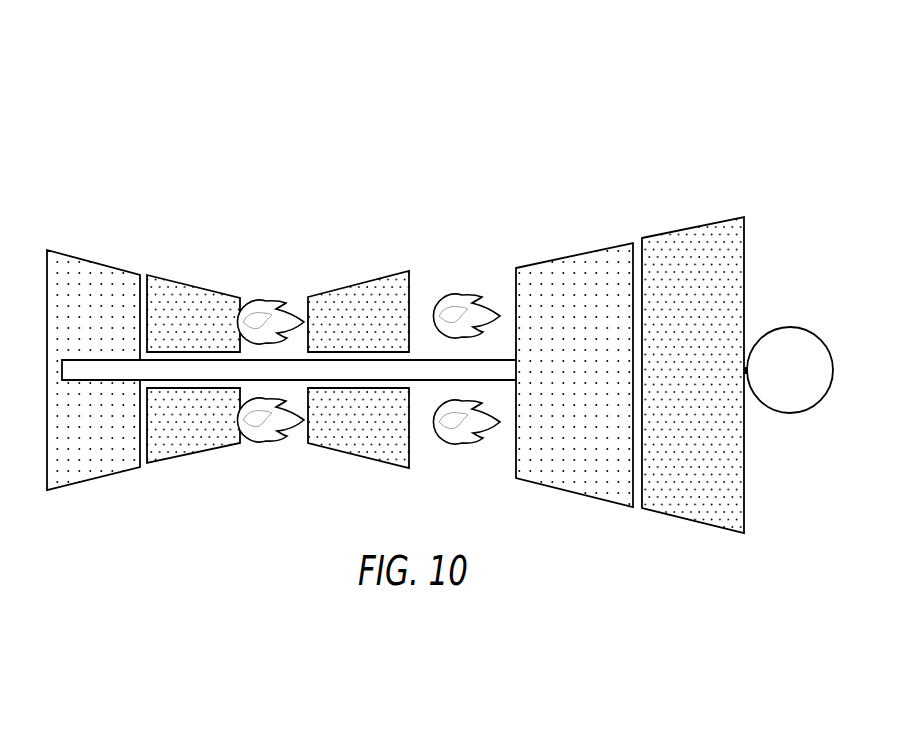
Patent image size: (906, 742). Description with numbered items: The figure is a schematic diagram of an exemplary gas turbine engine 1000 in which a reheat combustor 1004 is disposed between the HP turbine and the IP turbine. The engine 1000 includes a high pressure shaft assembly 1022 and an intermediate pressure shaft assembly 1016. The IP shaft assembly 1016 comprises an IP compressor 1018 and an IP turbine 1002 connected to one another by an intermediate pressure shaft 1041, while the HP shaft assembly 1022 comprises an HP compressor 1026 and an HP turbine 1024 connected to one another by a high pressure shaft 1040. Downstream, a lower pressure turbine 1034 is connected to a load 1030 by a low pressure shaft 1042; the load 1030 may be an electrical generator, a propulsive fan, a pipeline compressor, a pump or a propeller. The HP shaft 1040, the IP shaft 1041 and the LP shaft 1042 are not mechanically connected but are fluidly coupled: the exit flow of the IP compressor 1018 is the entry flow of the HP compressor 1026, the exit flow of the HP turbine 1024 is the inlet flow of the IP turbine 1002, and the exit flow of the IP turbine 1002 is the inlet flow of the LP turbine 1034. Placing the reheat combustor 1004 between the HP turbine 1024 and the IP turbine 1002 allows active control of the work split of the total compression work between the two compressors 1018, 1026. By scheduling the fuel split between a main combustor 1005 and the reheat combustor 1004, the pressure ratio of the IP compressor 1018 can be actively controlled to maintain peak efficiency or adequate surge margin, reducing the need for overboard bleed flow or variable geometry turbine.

The gas turbine engine 1000 is at (279, 107).
The intermediate pressure shaft assembly 1016 is at (79, 164).
The IP compressor 1018 is at (73, 255).
The high pressure shaft assembly 1022 is at (186, 177).
The HP compressor 1026 is at (177, 280).
The main combustor 1005 is at (265, 230).
The HP turbine 1024 is at (355, 280).
The reheat combustor 1004 is at (481, 213).
The IP turbine 1002 is at (583, 253).
The lower pressure turbine 1034 is at (716, 218).
The low pressure shaft 1042 is at (748, 363).
The load 1030 is at (790, 327).
The high pressure shaft 1040 is at (302, 390).
The intermediate pressure shaft 1041 is at (423, 382).